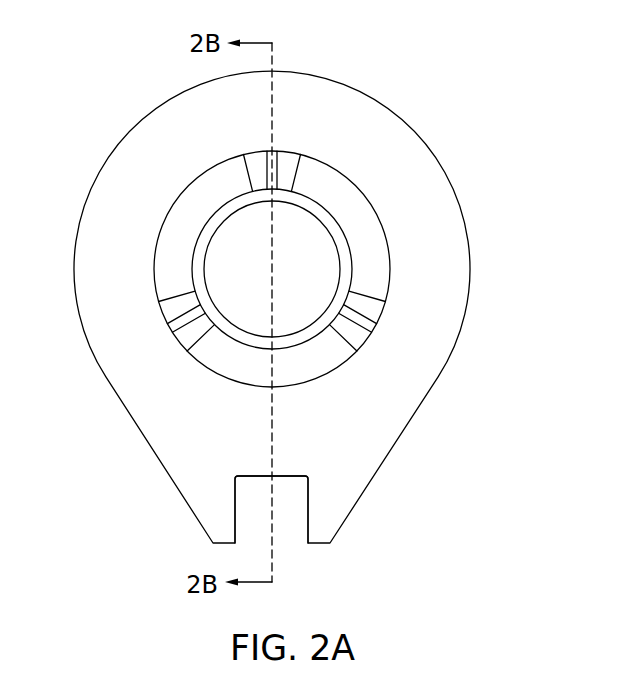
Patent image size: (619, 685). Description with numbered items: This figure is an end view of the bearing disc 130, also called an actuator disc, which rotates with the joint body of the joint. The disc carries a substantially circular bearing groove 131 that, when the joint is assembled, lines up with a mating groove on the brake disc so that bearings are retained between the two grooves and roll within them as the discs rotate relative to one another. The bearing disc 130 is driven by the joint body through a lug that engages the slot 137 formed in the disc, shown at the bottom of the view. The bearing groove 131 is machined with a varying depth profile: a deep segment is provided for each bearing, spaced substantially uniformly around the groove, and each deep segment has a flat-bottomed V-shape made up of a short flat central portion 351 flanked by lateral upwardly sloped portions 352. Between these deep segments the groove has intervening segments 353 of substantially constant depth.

The bearing disc 130 is at (431, 74).
The bearing groove 131 is at (389, 172).
The slot 137 is at (262, 505).
The flat central portion 351 is at (272, 175).
The upwardly sloped portion 352 is at (257, 173).
The intervening segment 353 is at (185, 217).